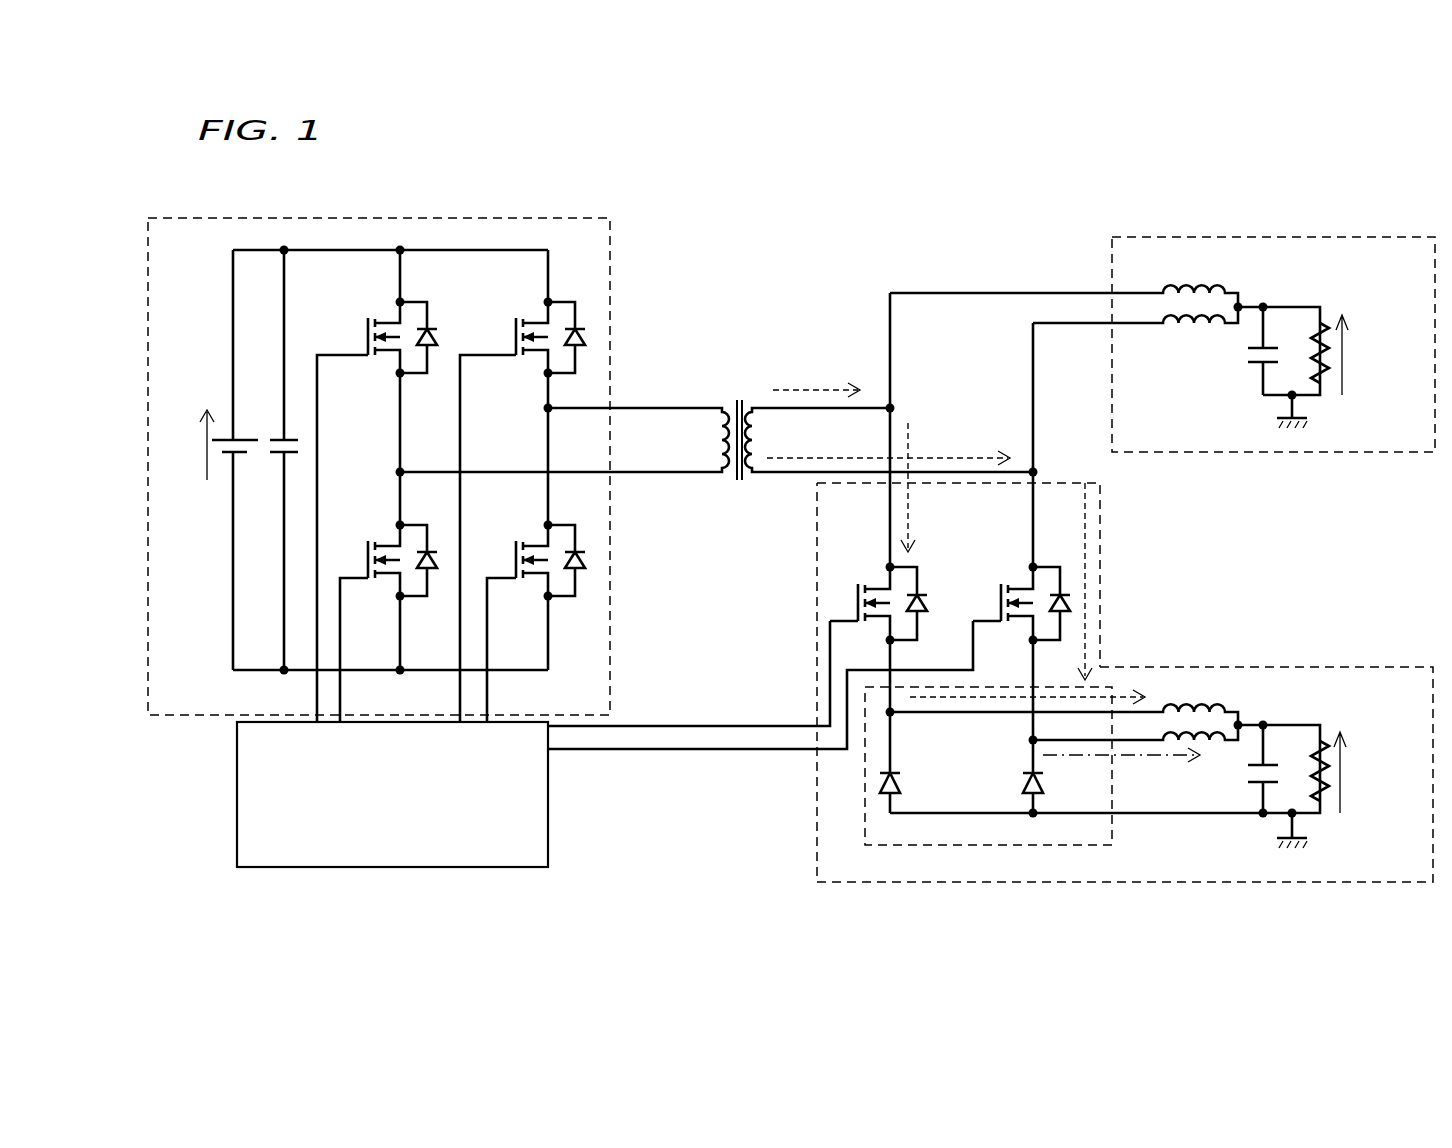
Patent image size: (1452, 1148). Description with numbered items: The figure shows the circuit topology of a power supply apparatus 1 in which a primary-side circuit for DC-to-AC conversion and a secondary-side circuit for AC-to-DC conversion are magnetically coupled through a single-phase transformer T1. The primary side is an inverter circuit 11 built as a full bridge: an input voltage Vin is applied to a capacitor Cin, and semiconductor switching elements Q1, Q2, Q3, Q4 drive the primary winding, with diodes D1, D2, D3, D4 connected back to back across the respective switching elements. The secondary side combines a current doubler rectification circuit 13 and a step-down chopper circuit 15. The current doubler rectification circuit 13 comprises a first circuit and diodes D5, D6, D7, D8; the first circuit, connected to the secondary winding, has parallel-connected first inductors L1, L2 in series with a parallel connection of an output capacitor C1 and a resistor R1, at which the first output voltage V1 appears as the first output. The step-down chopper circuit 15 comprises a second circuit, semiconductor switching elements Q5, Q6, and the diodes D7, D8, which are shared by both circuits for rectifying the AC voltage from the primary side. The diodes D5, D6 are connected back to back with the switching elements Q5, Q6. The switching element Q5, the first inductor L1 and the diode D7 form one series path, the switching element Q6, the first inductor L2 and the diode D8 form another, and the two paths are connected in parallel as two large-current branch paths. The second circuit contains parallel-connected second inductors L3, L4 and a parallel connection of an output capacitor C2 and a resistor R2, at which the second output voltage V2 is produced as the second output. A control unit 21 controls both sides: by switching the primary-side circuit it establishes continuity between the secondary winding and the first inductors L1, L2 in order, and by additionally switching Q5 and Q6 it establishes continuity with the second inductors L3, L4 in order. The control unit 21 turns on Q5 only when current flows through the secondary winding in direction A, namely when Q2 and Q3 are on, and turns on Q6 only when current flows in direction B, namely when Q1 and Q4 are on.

The power supply apparatus 1 is at (713, 243).
The inverter circuit 11 is at (340, 218).
The current doubler rectification circuit 13 is at (1233, 236).
The step-down chopper circuit 15 is at (1320, 666).
The control unit 21 is at (548, 805).
The semiconductor switching element Q1 is at (368, 316).
The semiconductor switching element Q2 is at (368, 540).
The semiconductor switching element Q3 is at (516, 316).
The semiconductor switching element Q4 is at (516, 540).
The semiconductor switching element Q5 is at (858, 584).
The semiconductor switching element Q6 is at (1001, 584).
The diode D1 is at (432, 328).
The diode D2 is at (432, 551).
The diode D3 is at (578, 328).
The diode D4 is at (578, 551).
The diode D5 is at (920, 596).
The diode D6 is at (1062, 594).
The diode D7 is at (902, 783).
The diode D8 is at (1022, 786).
The transformer T1 is at (735, 403).
The first inductor L1 is at (1198, 283).
The first inductor L2 is at (1188, 328).
The second inductor L3 is at (1210, 703).
The second inductor L4 is at (1220, 755).
The output capacitor C1 is at (1250, 362).
The output capacitor C2 is at (1250, 770).
The resistor R1 is at (1313, 357).
The resistor R2 is at (1313, 774).
The capacitor Cin is at (283, 438).
The input voltage Vin is at (208, 460).
The first output voltage V1 is at (1358, 355).
The second output voltage V2 is at (1354, 772).
The direction A is at (813, 375).
The direction B is at (888, 444).